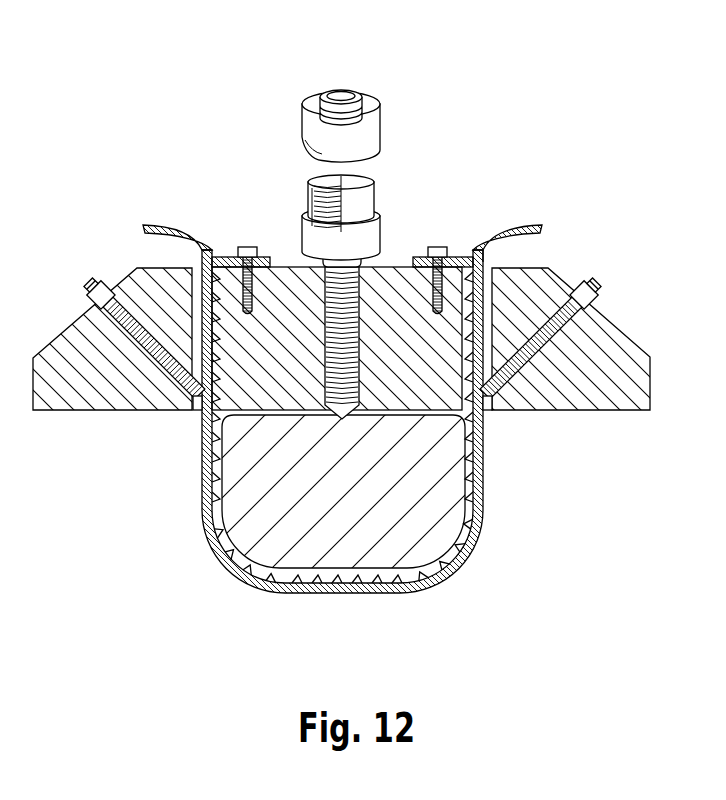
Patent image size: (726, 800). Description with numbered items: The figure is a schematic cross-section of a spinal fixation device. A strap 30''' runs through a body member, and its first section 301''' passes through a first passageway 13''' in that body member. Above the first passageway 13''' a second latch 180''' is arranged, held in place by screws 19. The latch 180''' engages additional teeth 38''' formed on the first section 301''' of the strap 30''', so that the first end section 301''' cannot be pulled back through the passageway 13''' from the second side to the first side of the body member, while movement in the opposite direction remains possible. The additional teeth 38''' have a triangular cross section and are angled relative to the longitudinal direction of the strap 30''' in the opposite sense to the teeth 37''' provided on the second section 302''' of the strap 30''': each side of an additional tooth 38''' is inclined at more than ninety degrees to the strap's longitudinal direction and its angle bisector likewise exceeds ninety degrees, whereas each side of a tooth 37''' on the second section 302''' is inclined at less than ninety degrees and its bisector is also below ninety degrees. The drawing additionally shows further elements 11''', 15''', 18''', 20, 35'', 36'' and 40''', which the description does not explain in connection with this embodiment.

The fastening screw 11''' is at (385, 276).
The first passageway 13''' is at (167, 387).
The right leg of retaining element 15''' is at (512, 387).
The transition region of retaining element 18''' is at (498, 204).
The screws 19 is at (247, 246).
The component body 20 is at (437, 532).
The strap 30''' is at (381, 434).
The left clamping screw 35'' is at (113, 313).
The right clamping screw 36'' is at (569, 314).
The teeth 37''' is at (382, 588).
The additional teeth 38''' is at (243, 593).
The cap 40''' is at (376, 85).
The second latch 180''' is at (342, 197).
The first section of the strap 301''' is at (142, 198).
The second section of the strap 302''' is at (555, 198).